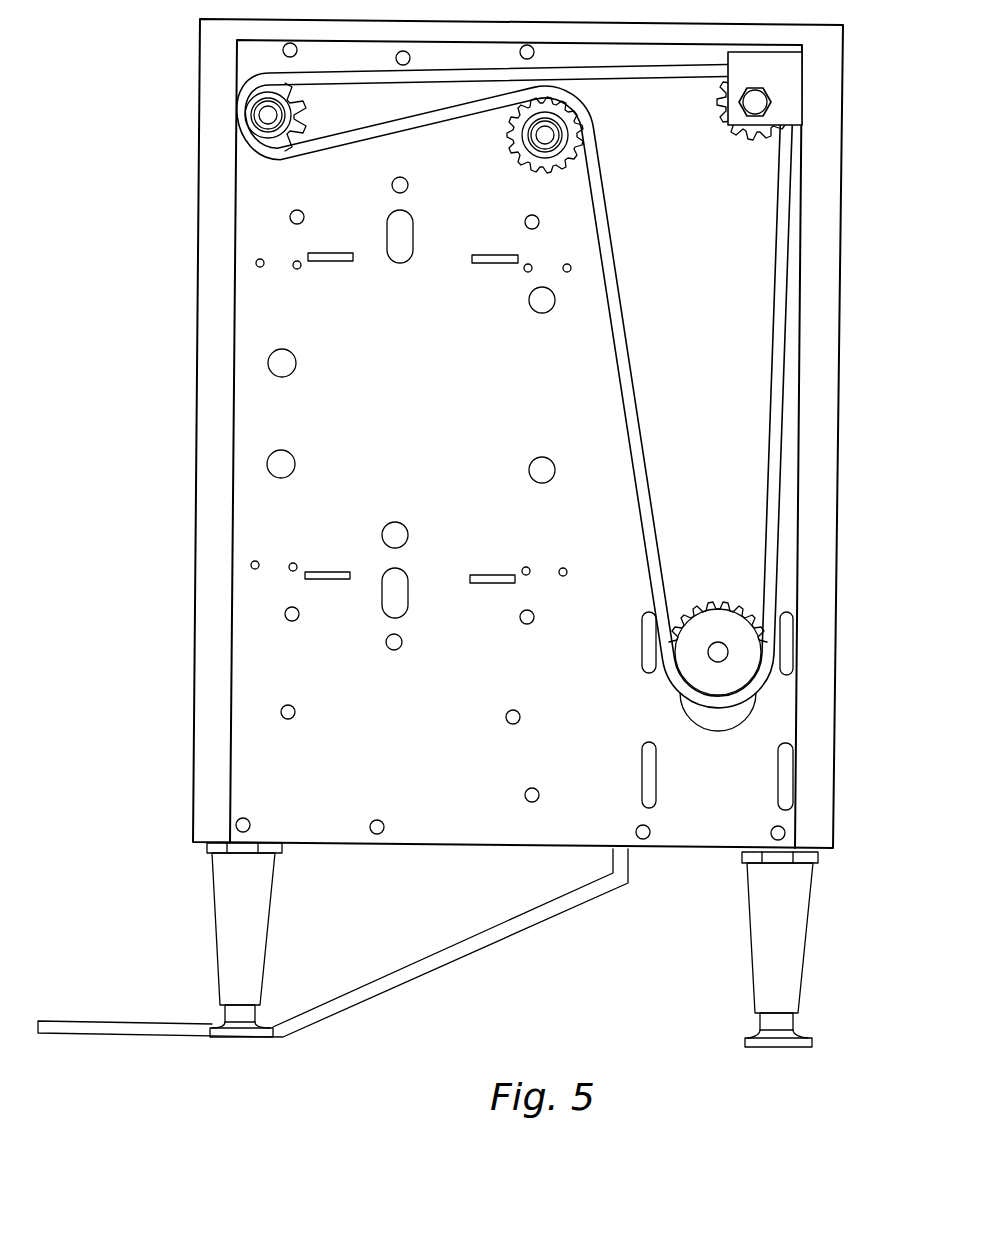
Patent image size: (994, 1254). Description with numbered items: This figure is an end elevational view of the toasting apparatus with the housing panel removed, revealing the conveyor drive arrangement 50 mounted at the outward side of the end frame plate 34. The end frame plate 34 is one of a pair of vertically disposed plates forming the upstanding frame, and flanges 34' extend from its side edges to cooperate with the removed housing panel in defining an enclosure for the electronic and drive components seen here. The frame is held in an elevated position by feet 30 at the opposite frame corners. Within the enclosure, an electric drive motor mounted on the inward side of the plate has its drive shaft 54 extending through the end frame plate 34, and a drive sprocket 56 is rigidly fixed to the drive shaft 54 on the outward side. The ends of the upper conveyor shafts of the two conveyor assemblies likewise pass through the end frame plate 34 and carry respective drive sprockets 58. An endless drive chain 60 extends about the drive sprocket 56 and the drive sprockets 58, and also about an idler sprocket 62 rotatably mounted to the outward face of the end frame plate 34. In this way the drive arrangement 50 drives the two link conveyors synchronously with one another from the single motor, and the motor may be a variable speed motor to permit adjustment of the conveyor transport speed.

The feet 30 is at (233, 948).
The end frame plate 34 is at (514, 441).
The flanges 34' is at (511, 433).
The drive arrangement 50 is at (460, 197).
The drive shaft 54 is at (715, 646).
The drive sprocket 56 is at (703, 678).
The drive sprockets 58 is at (292, 93).
The endless drive chain 60 is at (607, 272).
The idler sprocket 62 is at (753, 137).